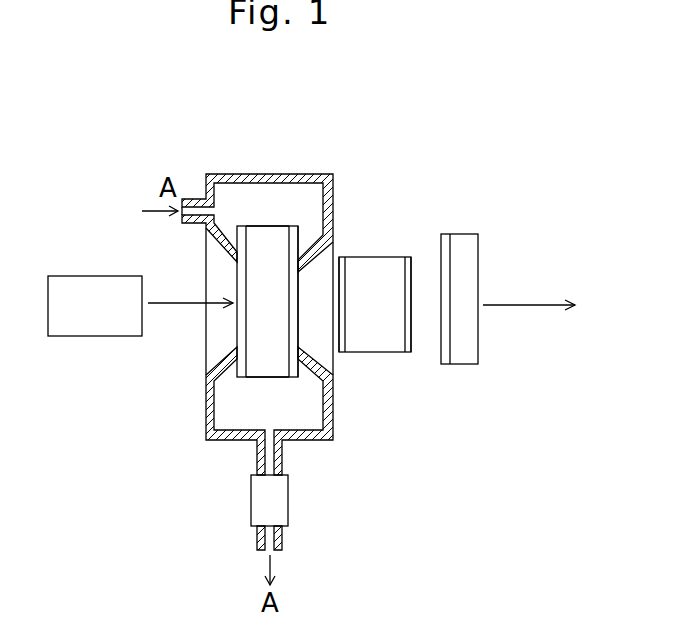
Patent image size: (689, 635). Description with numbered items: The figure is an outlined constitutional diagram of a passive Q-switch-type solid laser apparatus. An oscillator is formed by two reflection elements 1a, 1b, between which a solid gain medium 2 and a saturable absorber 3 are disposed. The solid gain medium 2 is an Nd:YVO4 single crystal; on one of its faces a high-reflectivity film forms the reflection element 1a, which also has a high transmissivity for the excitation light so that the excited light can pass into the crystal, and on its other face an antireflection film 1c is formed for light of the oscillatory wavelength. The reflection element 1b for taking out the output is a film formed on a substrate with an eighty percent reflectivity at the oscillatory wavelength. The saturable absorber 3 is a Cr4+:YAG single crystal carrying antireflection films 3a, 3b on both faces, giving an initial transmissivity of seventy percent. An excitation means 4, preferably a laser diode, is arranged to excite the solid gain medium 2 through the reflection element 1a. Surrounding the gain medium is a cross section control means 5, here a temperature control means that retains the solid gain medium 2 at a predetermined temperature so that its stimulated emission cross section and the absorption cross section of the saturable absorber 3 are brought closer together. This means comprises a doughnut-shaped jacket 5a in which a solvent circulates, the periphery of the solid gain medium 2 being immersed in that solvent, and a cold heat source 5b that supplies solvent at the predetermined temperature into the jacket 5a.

The reflection element 1a is at (240, 331).
The reflection element 1b is at (443, 343).
The antireflection film 1c is at (293, 330).
The solid gain medium 2 is at (262, 360).
The saturable absorber 3 is at (382, 277).
The antireflection film 3a is at (347, 272).
The antireflection film 3b is at (408, 277).
The excitation means 4 is at (83, 328).
The cross section control means 5 is at (290, 165).
The jacket 5a is at (320, 441).
The cold heat source 5b is at (250, 500).